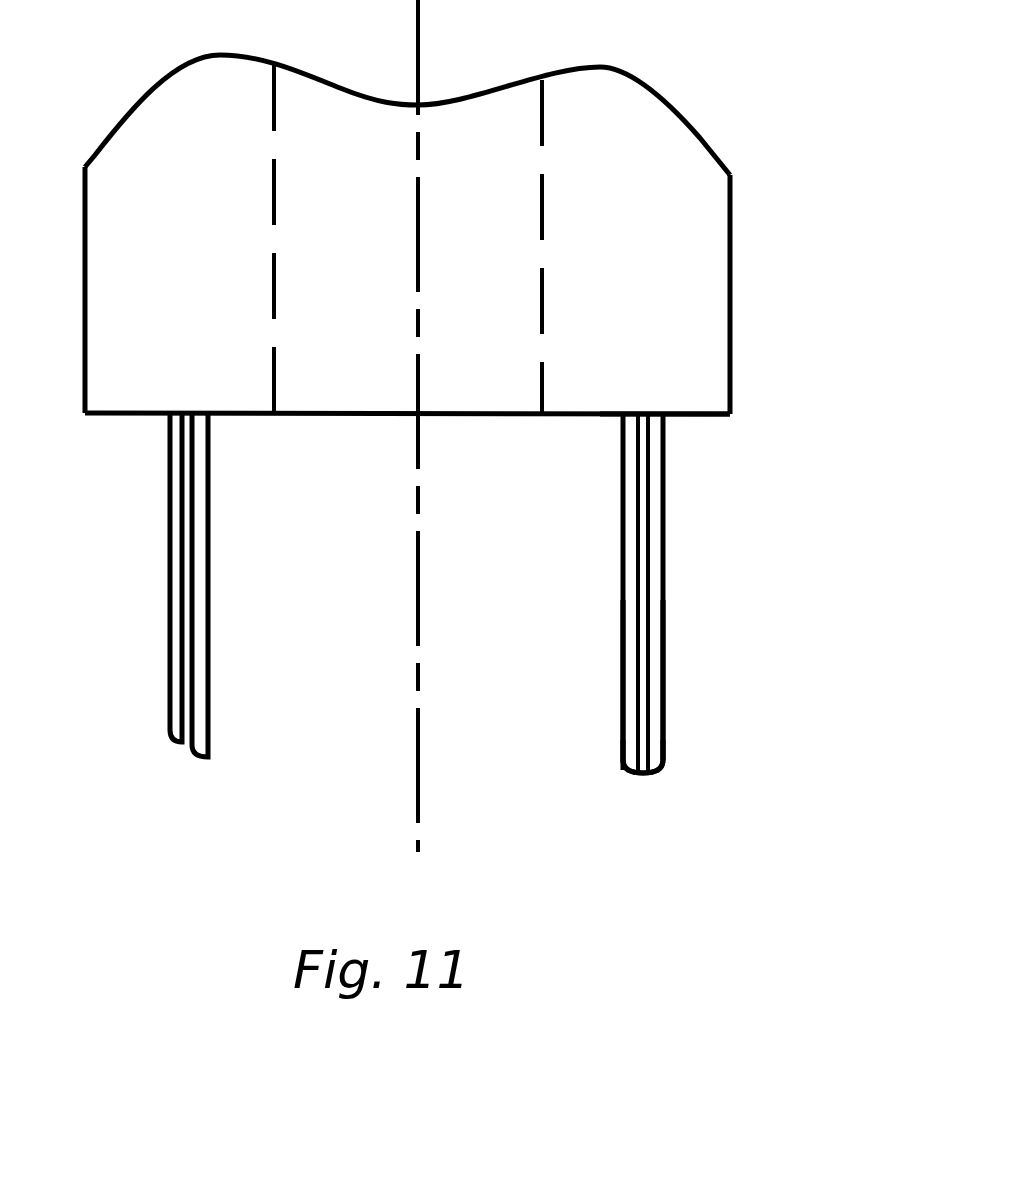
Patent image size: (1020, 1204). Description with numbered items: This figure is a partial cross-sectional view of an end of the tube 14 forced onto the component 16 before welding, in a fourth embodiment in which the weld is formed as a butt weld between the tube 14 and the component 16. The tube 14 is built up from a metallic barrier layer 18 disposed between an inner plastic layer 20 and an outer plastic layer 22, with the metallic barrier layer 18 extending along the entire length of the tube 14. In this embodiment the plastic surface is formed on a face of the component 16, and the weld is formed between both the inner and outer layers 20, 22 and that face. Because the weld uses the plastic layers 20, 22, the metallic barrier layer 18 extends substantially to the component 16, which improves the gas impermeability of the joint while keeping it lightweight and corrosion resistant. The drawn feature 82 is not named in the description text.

The tube 14 is at (683, 632).
The component 16 is at (748, 252).
The metallic barrier layer 18 is at (640, 776).
The inner plastic layer 20 is at (618, 742).
The outer plastic layer 22 is at (655, 733).
The body bottom edge 82 is at (692, 416).